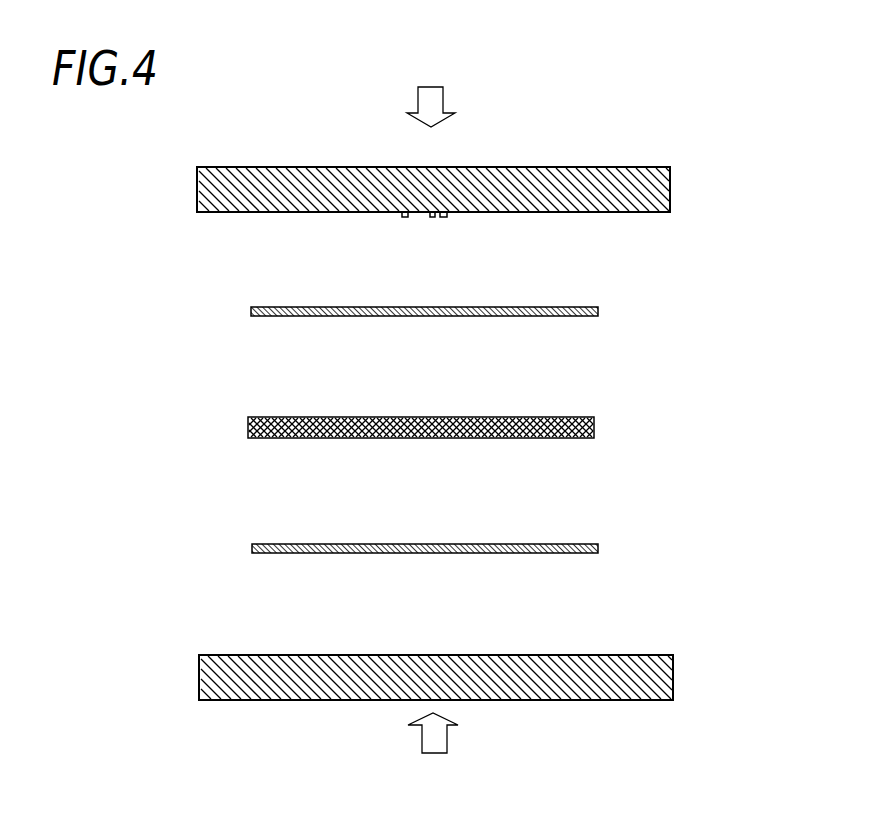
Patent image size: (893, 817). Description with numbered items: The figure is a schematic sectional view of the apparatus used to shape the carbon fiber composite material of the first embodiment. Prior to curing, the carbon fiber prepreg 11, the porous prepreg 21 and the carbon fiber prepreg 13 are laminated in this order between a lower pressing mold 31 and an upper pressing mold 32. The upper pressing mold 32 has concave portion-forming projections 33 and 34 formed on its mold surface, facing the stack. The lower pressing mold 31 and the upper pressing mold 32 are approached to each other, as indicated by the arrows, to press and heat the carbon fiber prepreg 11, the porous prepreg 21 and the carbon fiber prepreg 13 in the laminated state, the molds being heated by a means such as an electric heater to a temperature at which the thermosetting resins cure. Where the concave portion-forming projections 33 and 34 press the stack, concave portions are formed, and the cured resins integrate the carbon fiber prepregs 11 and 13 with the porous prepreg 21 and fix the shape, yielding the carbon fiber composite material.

The upper pressing mold 32 is at (583, 173).
The lower pressing mold 31 is at (582, 700).
The concave portion-forming projection 33 is at (404, 217).
The concave portion-forming projection 34 is at (432, 217).
The carbon fiber prepreg 13 is at (578, 312).
The porous prepreg 21 is at (592, 418).
The carbon fiber prepreg 11 is at (580, 547).